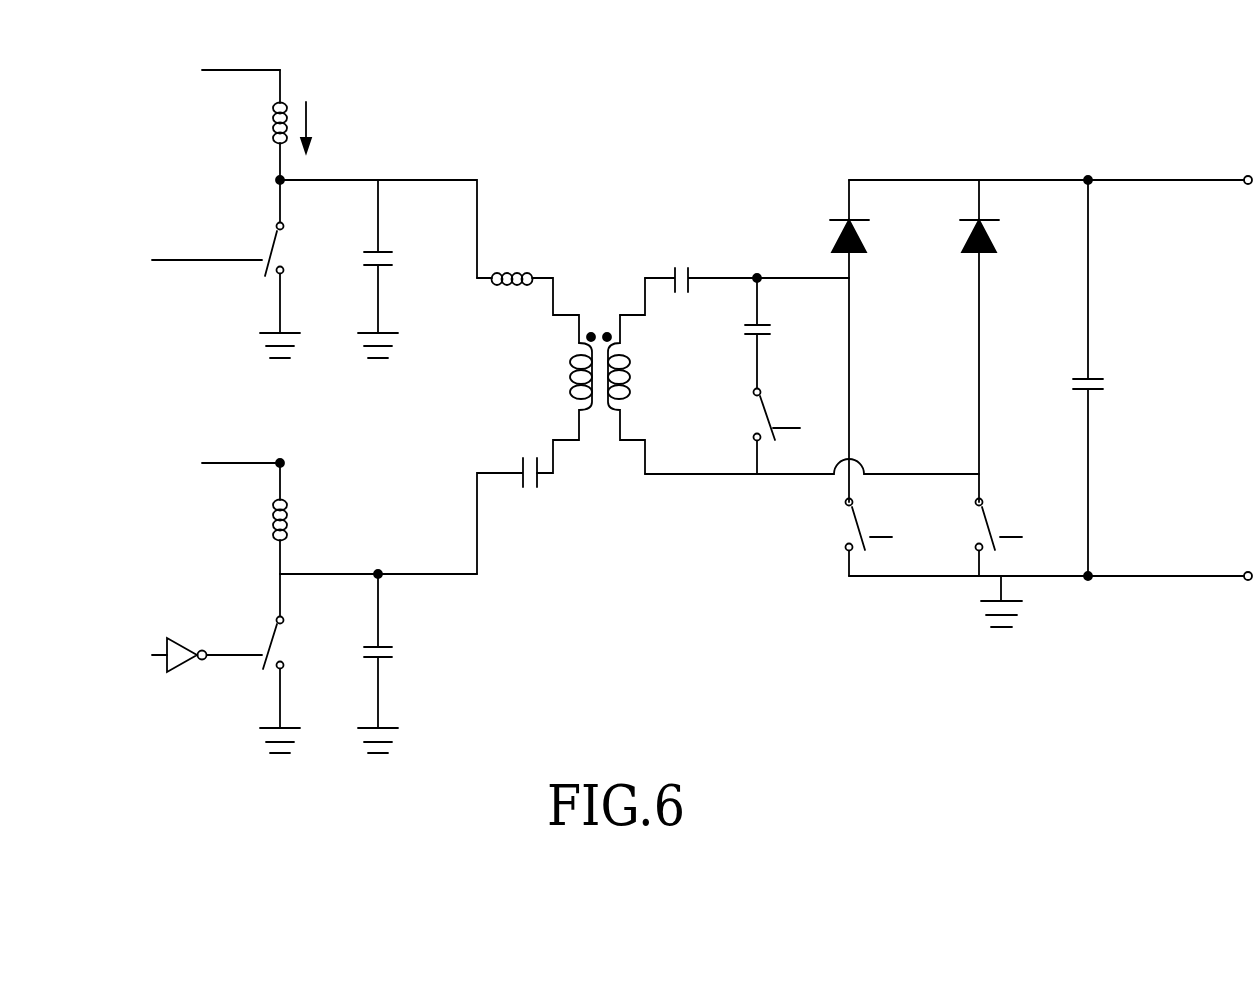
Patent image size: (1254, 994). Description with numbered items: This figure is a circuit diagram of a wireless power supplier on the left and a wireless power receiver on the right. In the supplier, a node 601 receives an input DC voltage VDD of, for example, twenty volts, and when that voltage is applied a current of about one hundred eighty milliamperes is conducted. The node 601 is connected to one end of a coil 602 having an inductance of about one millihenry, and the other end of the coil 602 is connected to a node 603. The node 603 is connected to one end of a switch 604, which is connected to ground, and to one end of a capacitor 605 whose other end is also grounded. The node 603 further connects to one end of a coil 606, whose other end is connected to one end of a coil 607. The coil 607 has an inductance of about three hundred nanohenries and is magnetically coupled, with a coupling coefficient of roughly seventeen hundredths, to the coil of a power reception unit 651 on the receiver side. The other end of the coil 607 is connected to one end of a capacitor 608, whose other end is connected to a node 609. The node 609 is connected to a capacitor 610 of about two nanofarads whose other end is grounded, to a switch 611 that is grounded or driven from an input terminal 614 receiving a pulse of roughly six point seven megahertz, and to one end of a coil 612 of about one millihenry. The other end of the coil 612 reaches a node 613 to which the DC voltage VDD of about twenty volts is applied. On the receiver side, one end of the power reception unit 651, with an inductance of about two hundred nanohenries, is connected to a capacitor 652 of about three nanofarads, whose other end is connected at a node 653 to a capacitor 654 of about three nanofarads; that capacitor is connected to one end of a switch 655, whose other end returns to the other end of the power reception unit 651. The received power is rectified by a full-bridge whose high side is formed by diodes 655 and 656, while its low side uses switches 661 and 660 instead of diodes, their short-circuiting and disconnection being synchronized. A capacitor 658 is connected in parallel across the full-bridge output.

The node 601 is at (280, 70).
The coil 602 is at (270, 143).
The node 603 is at (272, 182).
The switch 604 is at (262, 271).
The capacitor 605 is at (370, 266).
The coil 606 is at (513, 274).
The coil 607 is at (578, 327).
The capacitor 608 is at (532, 487).
The node 609 is at (378, 570).
The capacitor 610 is at (370, 658).
The switch 611 is at (275, 620).
The coil 612 is at (290, 504).
The node 613 is at (280, 463).
The input terminal 614 is at (197, 660).
The power reception unit 651 is at (611, 404).
The capacitor 652 is at (686, 268).
The node 653 is at (757, 277).
The capacitor 654 is at (770, 335).
The switch 655 is at (750, 396).
The diode 656 is at (991, 240).
The capacitor 658 is at (1075, 392).
The switch 660 is at (1001, 548).
The switch 661 is at (871, 548).